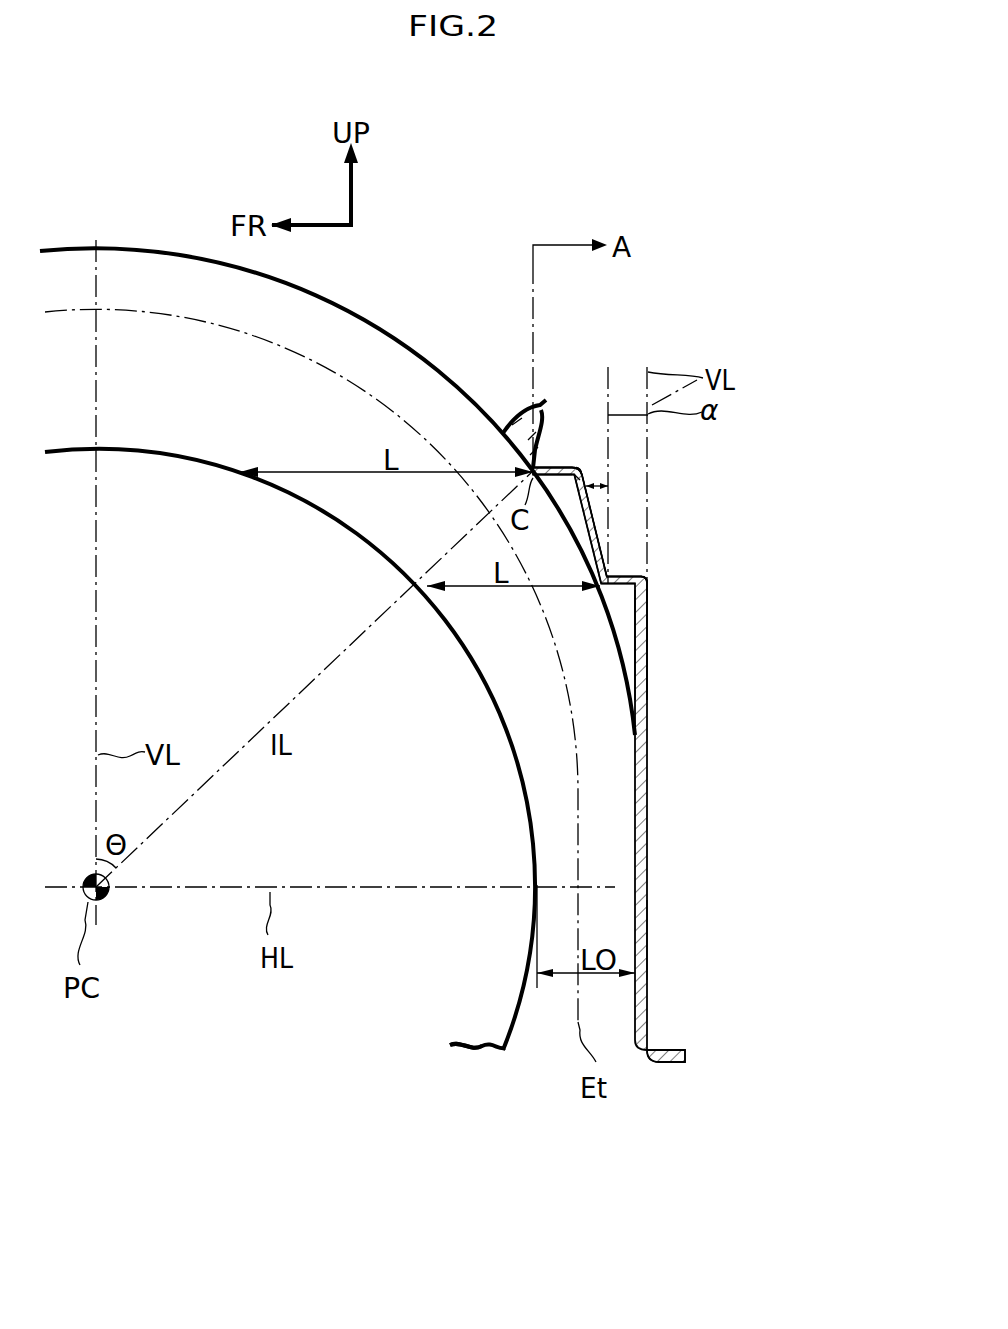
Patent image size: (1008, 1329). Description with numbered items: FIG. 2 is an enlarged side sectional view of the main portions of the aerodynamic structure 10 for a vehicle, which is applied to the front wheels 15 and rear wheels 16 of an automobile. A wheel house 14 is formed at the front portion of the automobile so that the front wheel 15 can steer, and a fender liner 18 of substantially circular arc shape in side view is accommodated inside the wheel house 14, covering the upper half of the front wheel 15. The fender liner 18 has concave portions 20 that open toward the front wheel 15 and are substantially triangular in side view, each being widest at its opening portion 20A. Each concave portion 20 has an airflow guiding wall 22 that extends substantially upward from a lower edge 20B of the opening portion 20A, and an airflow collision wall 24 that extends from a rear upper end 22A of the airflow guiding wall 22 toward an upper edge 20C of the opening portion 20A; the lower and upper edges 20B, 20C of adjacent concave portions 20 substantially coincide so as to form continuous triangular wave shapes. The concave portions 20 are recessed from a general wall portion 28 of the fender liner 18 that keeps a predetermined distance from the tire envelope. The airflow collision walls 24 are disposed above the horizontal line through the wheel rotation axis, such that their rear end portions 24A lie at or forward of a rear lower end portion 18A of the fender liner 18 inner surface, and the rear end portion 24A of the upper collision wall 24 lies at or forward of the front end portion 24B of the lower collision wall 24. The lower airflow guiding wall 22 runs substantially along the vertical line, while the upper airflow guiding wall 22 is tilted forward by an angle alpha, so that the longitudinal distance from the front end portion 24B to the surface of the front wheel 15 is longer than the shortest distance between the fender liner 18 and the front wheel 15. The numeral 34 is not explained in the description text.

The aerodynamic structure for a vehicle 10 is at (472, 306).
The wheel house 14 is at (222, 412).
The front wheel 15 is at (482, 1025).
The rear wheel 16 is at (479, 1101).
The fender liner 18 is at (660, 790).
The rear lower end portion 18A is at (655, 1045).
The concave portion 20 is at (602, 530).
The opening portion 20A is at (610, 633).
The lower edge 20B is at (640, 686).
The upper edge 20C is at (630, 399).
The airflow guiding wall 22 is at (592, 500).
The rear upper end 22A is at (586, 468).
The airflow collision wall 24 is at (583, 466).
The rear end portion 24A is at (699, 455).
The front end portion 24B is at (556, 465).
The general wall portion 28 is at (645, 934).
The wheel house liner edge 34 is at (518, 415).